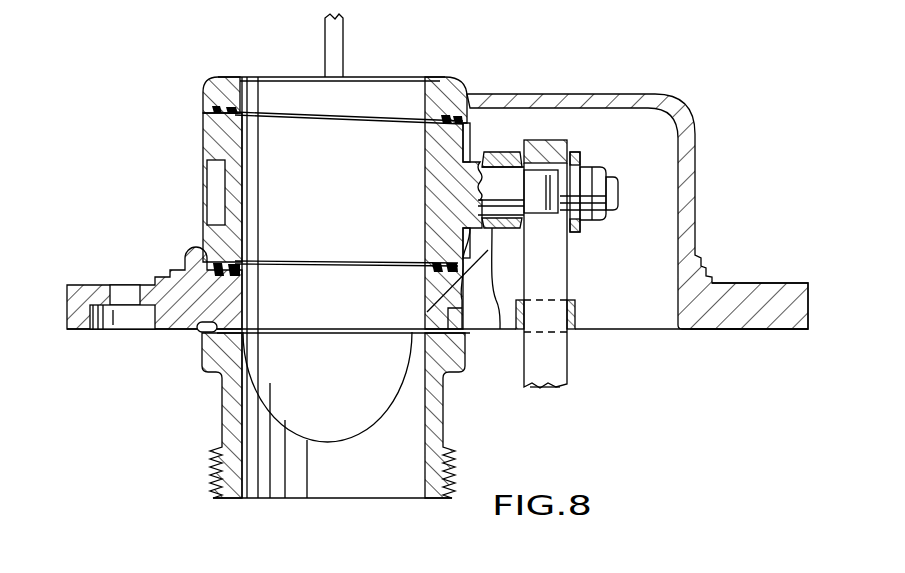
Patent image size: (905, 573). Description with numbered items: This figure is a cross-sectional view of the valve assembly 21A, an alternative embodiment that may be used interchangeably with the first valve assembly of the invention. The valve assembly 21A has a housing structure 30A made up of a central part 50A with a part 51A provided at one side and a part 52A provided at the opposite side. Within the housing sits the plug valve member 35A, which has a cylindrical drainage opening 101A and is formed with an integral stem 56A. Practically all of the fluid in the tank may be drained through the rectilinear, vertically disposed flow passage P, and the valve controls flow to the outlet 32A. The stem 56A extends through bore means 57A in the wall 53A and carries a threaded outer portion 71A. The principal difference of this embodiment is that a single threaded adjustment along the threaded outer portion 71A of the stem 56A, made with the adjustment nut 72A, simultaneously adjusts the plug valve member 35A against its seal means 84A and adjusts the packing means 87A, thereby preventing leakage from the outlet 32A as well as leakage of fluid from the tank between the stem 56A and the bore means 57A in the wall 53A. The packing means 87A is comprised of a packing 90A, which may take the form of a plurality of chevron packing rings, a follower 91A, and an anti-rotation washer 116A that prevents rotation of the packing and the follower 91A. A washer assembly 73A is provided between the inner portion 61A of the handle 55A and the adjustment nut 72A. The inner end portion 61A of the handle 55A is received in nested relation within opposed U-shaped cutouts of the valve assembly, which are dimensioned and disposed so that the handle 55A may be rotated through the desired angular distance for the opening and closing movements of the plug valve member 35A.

The valve assembly 21A is at (765, 109).
The housing structure 30A is at (637, 181).
The outlet 32A is at (425, 306).
The plug valve member 35A is at (207, 137).
The central part 50A is at (696, 160).
The part 51A is at (222, 97).
The part 52A is at (627, 93).
The wall 53A is at (462, 309).
The handle 55A is at (553, 388).
The stem 56A is at (500, 177).
The bore means 57A is at (477, 174).
The inner portion of the handle 61A is at (568, 351).
The threaded outer portion 71A is at (619, 191).
The adjustment nut 72A is at (598, 221).
The washer assembly 73A is at (586, 151).
The seal means 84A is at (222, 106).
The packing means 87A is at (496, 148).
The packing 90A is at (487, 234).
The follower 91A is at (518, 153).
The cylindrical drainage opening 101A is at (235, 262).
The anti-rotation washer 116A is at (519, 222).
The flow passage P is at (302, 341).